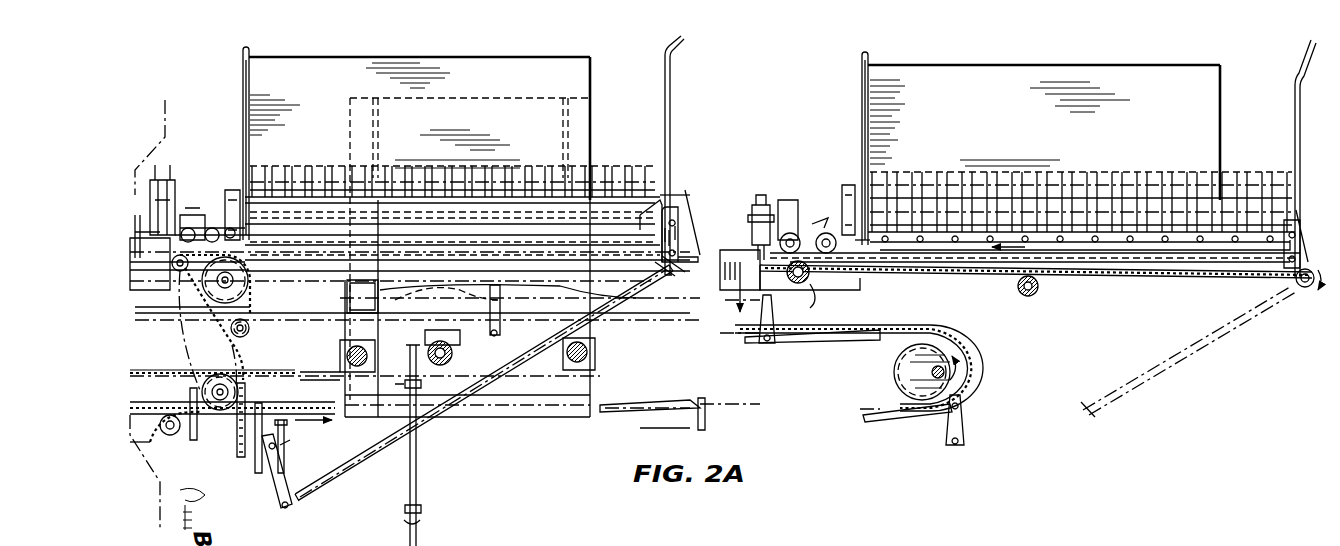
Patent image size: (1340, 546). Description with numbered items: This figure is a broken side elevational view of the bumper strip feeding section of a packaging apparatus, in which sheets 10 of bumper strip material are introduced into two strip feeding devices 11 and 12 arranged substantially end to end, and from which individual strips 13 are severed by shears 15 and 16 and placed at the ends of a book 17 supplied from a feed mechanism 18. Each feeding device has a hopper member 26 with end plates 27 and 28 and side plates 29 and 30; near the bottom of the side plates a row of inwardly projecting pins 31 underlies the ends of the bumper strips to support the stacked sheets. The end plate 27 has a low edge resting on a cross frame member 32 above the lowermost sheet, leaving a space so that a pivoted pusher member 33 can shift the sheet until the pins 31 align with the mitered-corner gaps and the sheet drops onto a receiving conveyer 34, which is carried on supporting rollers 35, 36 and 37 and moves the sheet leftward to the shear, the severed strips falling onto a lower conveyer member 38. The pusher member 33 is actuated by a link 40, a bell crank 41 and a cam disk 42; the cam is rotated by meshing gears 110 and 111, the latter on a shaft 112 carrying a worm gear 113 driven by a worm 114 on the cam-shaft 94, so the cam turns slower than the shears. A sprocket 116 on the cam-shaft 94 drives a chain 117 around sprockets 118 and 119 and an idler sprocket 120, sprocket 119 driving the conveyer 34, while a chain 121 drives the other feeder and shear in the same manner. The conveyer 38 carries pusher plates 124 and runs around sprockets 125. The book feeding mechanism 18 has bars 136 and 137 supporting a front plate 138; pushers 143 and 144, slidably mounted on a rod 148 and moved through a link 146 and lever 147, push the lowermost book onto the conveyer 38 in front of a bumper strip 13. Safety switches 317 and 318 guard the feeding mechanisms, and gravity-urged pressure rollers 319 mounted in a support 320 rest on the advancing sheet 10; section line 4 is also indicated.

The section line 4- 4 is at (163, 128).
The sheet of bumper strip material 10 is at (640, 168).
The bumper strip feeding device 11 is at (815, 74).
The bumper strip feeding device 12 is at (720, 74).
The bumper strip 13 is at (752, 333).
The shear 15 is at (748, 196).
The shear 16 is at (165, 190).
The book 17 is at (478, 290).
The feed mechanism 18 is at (492, 308).
The hopper member 26 is at (603, 118).
The end plate 27 is at (243, 104).
The end plate 28 is at (672, 80).
The side plate 29 is at (557, 57).
The side plate 30 is at (650, 222).
The pin 31 is at (1210, 240).
The cross frame member 32 is at (232, 192).
The pusher member 33 is at (682, 232).
The receiving conveyer 34 is at (1142, 284).
The supporting roller 35 is at (806, 290).
The supporting roller 36 is at (1028, 297).
The supporting roller 37 is at (1310, 290).
The lower conveyer member 38 is at (918, 328).
The link 40 is at (312, 498).
The bell crank 41 is at (272, 496).
The cam disk 42 is at (288, 436).
The cam-shaft 94 is at (200, 392).
The gear 110 is at (254, 465).
The gear 111 is at (233, 450).
The shaft 112 is at (250, 402).
The worm gear 113 is at (236, 432).
The worm 114 is at (222, 304).
The sprocket 116 is at (172, 365).
The chain 117 is at (237, 358).
The sprocket 118 is at (248, 293).
The sprocket 119 is at (190, 296).
The idler sprocket 120 is at (250, 334).
The chain 121 is at (318, 364).
The pusher plate 124 is at (722, 308).
The sprocket 125 is at (895, 372).
The bar 136 is at (346, 352).
The bar 137 is at (590, 352).
The front plate 138 is at (590, 150).
The pusher 143 is at (365, 312).
The pusher 144 is at (464, 338).
The link 146 is at (424, 516).
The lever 147 is at (420, 500).
The rod 148 is at (440, 366).
The safety switch 317 is at (792, 204).
The safety switch 318 is at (196, 210).
The pressure roller 319 is at (810, 230).
The support 320 is at (1035, 250).